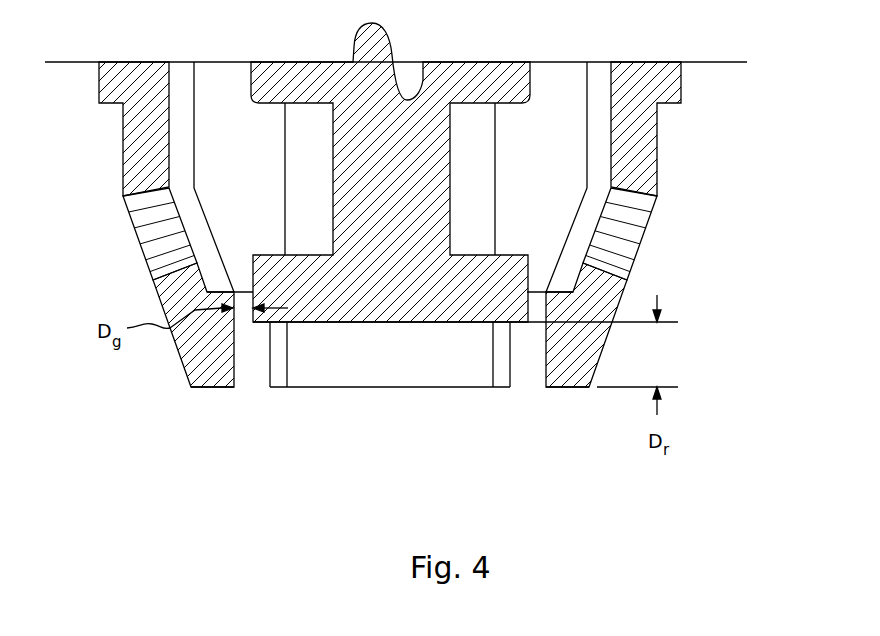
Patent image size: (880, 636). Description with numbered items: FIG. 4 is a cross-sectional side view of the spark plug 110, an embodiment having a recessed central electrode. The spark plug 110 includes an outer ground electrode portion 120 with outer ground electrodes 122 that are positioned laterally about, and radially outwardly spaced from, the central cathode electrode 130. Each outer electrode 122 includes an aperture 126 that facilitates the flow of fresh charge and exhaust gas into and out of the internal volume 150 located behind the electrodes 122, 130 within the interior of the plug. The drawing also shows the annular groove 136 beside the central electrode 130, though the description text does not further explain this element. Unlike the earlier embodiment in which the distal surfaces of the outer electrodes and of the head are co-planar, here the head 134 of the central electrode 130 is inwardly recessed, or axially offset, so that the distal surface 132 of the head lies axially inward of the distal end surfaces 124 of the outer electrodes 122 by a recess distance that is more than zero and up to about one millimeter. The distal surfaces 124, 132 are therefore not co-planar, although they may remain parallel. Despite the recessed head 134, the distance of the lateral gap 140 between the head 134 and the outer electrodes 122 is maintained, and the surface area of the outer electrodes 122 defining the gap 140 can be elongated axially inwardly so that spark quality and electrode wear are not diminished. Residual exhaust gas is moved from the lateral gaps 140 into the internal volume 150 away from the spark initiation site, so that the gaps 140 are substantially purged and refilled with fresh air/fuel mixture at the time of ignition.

The spark plug 110 is at (403, 460).
The outer ground electrode portion 120 is at (690, 83).
The outer ground electrodes 122 is at (185, 367).
The distal end surfaces of the outer electrodes 124 is at (207, 387).
The apertures 126 is at (150, 242).
The central cathode electrode 130 is at (387, 332).
The distal surface of the head 132 is at (438, 322).
The head of the central electrode 134 is at (480, 310).
The annular groove 136 is at (333, 135).
The lateral gap 140 is at (243, 310).
The internal volume 150 is at (260, 192).